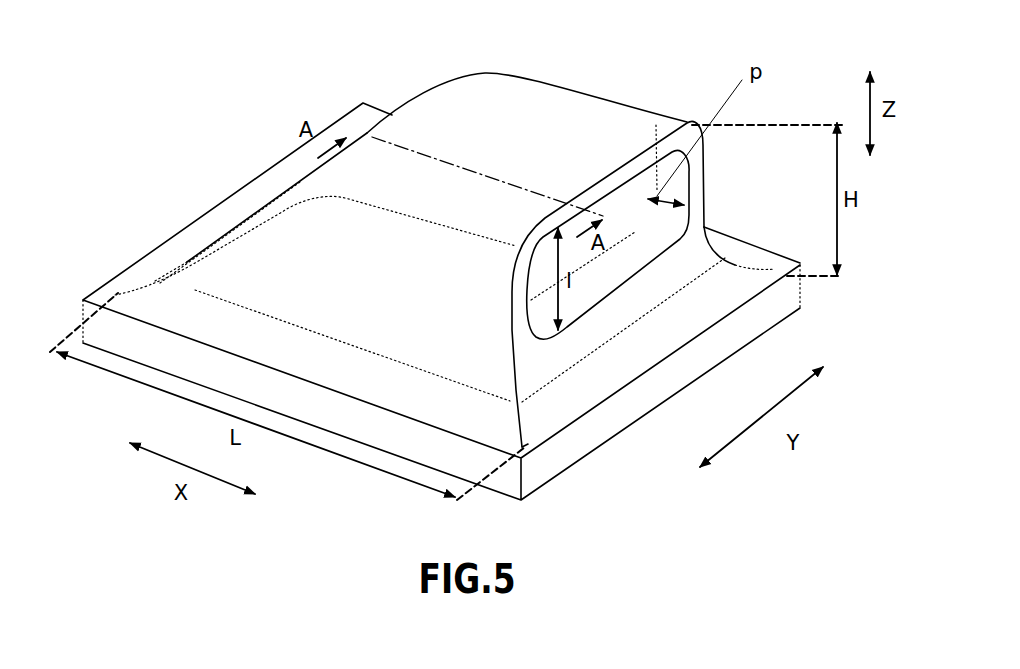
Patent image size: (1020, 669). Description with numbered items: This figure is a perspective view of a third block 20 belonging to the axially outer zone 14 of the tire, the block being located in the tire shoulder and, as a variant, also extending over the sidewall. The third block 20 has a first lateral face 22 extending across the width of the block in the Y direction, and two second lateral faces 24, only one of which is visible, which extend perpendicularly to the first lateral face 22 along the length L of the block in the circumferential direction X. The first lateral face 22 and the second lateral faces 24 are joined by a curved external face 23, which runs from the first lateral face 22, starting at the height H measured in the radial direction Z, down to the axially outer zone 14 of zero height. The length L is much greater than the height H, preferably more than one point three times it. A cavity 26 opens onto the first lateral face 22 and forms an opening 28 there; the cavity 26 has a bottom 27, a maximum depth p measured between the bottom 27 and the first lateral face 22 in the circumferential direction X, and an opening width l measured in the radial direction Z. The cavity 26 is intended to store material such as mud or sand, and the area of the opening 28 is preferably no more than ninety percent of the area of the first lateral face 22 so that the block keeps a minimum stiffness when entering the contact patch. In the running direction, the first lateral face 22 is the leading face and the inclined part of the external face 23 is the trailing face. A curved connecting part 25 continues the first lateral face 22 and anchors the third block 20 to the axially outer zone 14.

The axially outer zone 14 is at (153, 272).
The third block 20 is at (306, 78).
The first lateral face 22 is at (547, 355).
The external face 23 is at (493, 162).
The second lateral faces 24 is at (315, 272).
The connecting part 25 is at (670, 318).
The cavity 26 is at (624, 266).
The bottom 27 is at (645, 192).
The opening 28 is at (608, 192).